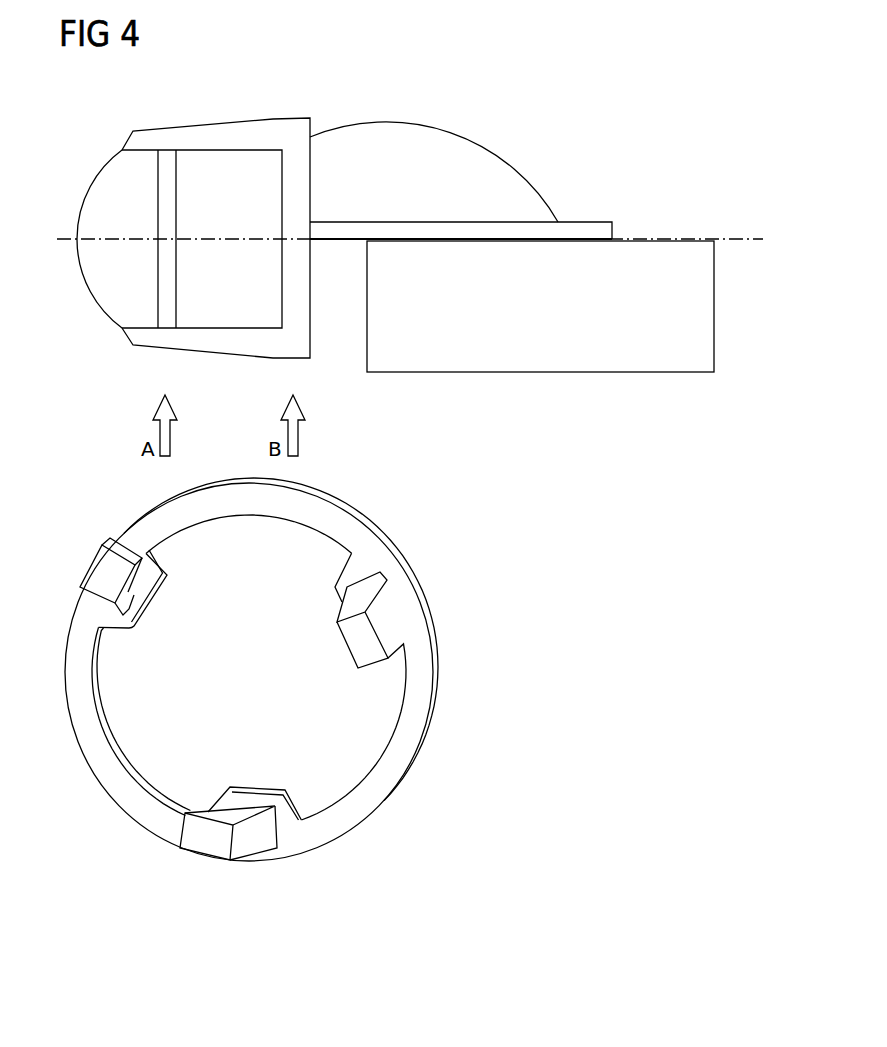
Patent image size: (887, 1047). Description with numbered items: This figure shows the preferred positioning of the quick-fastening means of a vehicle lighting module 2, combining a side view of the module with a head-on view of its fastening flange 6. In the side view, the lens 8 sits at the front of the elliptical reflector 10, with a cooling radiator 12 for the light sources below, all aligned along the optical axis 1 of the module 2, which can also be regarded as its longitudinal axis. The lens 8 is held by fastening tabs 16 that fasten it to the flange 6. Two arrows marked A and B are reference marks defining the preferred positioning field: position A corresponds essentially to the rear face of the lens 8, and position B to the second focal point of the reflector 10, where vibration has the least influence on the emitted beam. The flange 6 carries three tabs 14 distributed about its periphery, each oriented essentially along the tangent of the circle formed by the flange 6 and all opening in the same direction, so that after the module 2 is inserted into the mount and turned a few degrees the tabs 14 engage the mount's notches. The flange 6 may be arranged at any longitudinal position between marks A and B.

The optical axis 1 is at (745, 239).
The lighting module 2 is at (461, 155).
The fastening flange 6 is at (348, 540).
The lens 8 is at (108, 195).
The reflector 10 is at (438, 140).
The cooling radiator 12 is at (575, 352).
The tabs 14 is at (360, 647).
The fastening tabs 16 is at (207, 137).